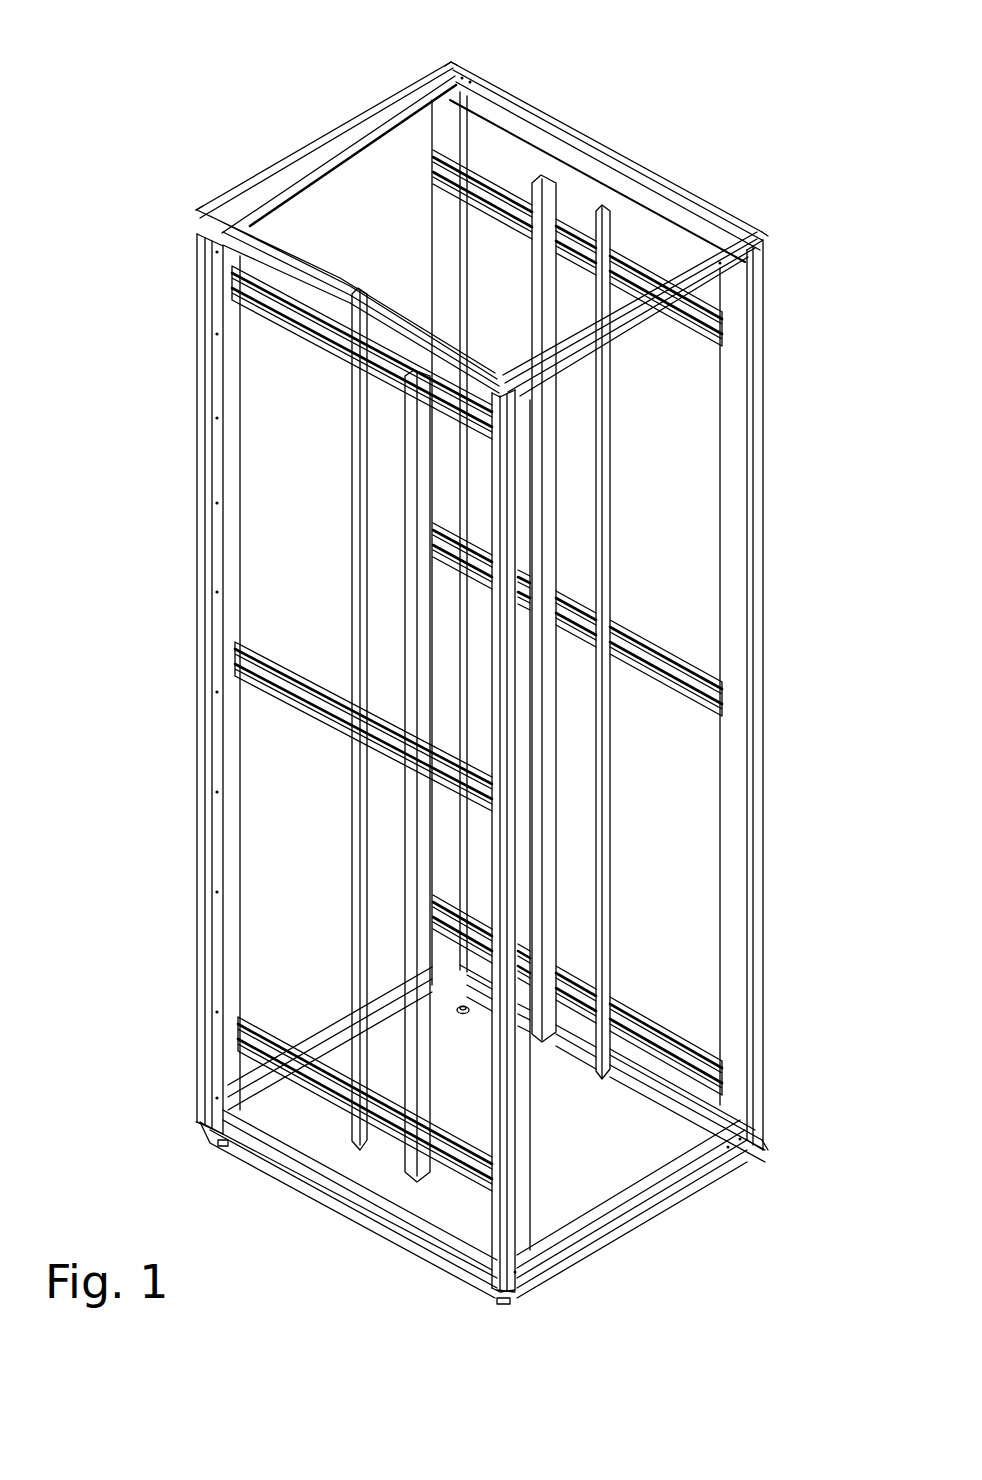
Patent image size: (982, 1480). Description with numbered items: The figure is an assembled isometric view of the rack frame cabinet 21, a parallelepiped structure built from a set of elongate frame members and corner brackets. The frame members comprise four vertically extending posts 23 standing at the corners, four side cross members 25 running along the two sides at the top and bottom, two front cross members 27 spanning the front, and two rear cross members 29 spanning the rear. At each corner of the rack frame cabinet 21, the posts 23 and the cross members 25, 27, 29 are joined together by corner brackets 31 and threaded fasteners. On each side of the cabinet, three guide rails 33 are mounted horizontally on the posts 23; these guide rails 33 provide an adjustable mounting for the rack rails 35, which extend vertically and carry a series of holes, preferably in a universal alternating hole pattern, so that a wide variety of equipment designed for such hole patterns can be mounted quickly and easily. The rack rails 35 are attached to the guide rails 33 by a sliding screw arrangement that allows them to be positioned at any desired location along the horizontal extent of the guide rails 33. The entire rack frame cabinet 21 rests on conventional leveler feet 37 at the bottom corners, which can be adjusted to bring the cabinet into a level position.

The rack frame cabinet 21 is at (778, 677).
The vertically extending post 23 is at (445, 250).
The side cross member 25 is at (577, 128).
The front cross member 27 is at (620, 317).
The rear cross member 29 is at (345, 158).
The corner bracket 31 is at (451, 60).
The guide rail 33 is at (318, 335).
The rack rail 35 is at (540, 268).
The leveler foot 37 is at (463, 1015).